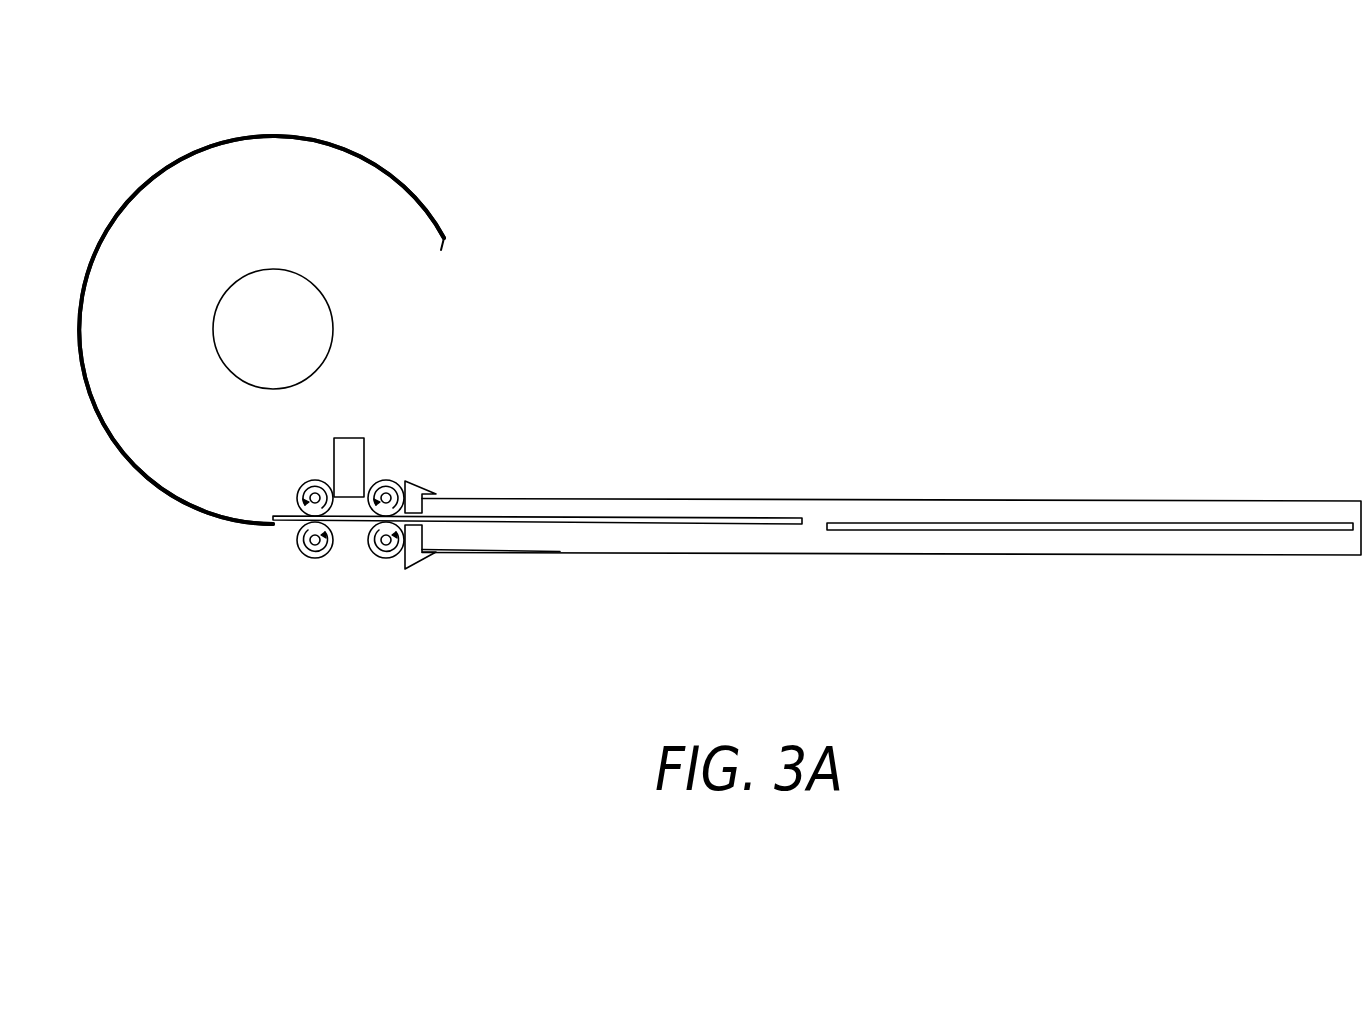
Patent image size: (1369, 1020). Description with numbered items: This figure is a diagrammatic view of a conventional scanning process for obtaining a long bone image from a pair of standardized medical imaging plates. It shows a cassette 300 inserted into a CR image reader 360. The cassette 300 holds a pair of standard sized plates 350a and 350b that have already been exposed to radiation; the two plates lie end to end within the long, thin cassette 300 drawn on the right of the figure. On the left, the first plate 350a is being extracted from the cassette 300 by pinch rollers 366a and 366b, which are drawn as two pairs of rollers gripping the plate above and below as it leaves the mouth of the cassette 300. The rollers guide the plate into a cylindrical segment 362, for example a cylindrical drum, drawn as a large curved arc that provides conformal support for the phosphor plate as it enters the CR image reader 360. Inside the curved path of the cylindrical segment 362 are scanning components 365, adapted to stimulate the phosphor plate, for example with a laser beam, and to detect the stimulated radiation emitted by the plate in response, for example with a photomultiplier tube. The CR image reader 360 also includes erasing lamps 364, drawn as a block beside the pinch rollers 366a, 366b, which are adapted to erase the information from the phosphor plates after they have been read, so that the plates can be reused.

The CR image reader 360 is at (165, 153).
The cylindrical segment 362 is at (375, 157).
The scanning components 365 is at (288, 270).
The erasing lamps 364 is at (352, 438).
The pinch rollers 366a is at (297, 498).
The pinch rollers 366b is at (387, 480).
The cassette 300 is at (843, 499).
The plate 350a is at (637, 518).
The plate 350b is at (1047, 523).